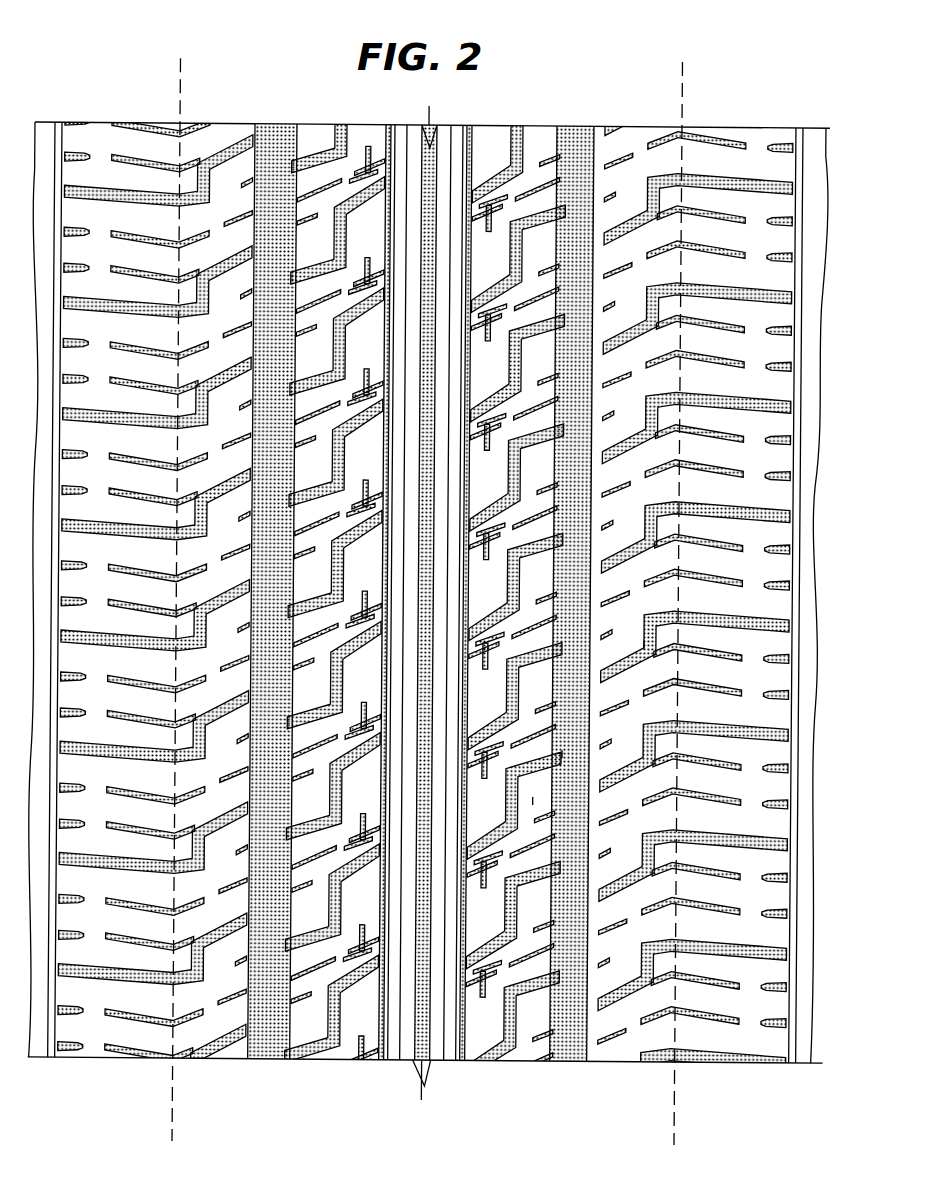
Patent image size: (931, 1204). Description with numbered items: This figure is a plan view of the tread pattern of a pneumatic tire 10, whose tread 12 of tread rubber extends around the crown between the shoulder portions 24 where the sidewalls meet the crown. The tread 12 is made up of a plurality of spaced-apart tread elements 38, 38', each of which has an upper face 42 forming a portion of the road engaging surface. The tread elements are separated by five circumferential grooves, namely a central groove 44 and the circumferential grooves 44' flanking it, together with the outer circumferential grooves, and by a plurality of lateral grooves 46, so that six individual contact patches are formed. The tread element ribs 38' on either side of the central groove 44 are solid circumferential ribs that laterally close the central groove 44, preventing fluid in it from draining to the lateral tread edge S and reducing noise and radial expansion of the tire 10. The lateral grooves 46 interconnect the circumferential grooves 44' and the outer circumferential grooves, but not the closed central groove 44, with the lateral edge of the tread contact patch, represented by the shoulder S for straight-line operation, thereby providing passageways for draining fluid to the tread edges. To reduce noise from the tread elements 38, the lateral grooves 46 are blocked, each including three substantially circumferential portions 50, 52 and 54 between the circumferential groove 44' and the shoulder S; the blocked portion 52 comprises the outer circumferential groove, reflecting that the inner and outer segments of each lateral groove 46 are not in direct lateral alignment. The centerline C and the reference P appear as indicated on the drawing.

The pneumatic tire 10 is at (92, 118).
The tread 12 is at (431, 602).
The shoulder portions 24 is at (108, 1062).
The tread elements 38 is at (397, 602).
The tread element ribs 38' is at (417, 631).
The upper face 42 is at (95, 665).
The central circumferential groove 44 is at (470, 570).
The circumferential grooves 44' is at (444, 571).
The lateral grooves 46 is at (703, 497).
The circumferential portion 50 is at (538, 797).
The blocked portion 52 is at (567, 750).
The circumferential portion 54 is at (648, 640).
The circumferential centerline C is at (429, 103).
The pitch reference P is at (418, 1098).
The shoulder S is at (422, 620).